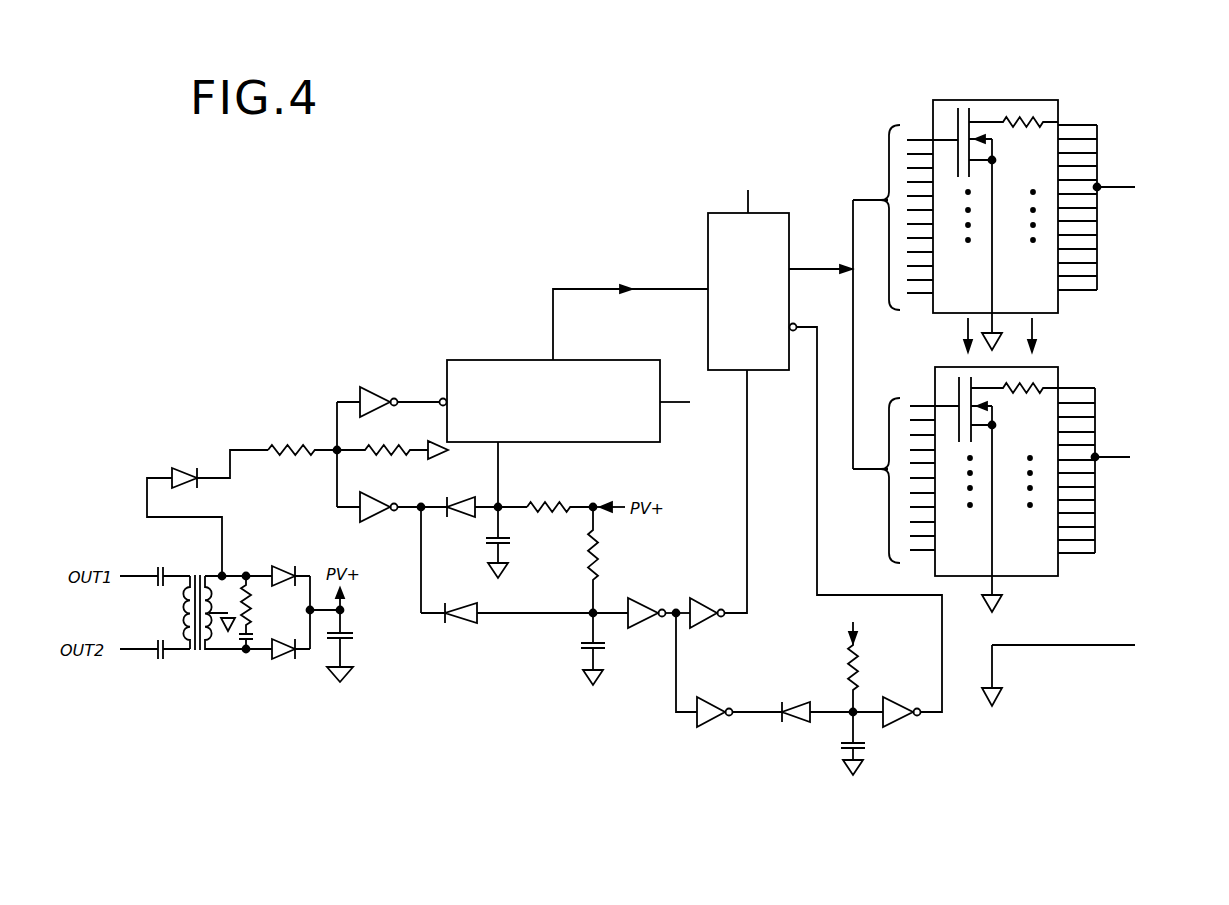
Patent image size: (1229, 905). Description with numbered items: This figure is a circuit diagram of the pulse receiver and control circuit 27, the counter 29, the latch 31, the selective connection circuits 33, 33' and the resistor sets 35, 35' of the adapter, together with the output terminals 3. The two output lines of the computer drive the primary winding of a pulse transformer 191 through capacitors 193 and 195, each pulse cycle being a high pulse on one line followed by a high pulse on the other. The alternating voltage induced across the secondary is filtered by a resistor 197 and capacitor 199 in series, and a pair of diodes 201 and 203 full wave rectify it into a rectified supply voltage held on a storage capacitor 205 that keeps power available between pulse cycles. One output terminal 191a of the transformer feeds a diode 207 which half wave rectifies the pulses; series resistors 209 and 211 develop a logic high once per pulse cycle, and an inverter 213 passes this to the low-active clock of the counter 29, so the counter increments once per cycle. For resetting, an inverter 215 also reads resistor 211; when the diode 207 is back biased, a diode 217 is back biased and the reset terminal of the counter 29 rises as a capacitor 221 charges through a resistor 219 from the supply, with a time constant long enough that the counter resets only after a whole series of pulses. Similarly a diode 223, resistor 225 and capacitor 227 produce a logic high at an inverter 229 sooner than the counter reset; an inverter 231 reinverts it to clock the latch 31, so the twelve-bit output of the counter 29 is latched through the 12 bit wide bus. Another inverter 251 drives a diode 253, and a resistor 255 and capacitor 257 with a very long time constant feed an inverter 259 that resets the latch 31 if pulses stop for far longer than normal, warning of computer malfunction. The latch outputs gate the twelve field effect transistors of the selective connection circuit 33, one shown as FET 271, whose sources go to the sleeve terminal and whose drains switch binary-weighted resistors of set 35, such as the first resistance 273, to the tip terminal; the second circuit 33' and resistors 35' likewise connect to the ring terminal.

The output terminals 3 is at (1160, 392).
The 12 bit wide bus 12 is at (872, 458).
The pulse receiver and control circuit 27 is at (462, 673).
The counter 29 is at (645, 360).
The latch 31 is at (708, 213).
The selective connection circuit 33 is at (1002, 185).
The set of resistors 35 is at (1032, 185).
The second selective connection circuit 33' is at (995, 474).
The second set of resistors 35' is at (1073, 351).
The pulse transformer 191 is at (200, 660).
The output terminal 191a is at (222, 573).
The capacitor 193 is at (162, 662).
The capacitor 195 is at (172, 556).
The resistor 197 is at (258, 612).
The capacitor 199 is at (258, 652).
The diode 201 is at (290, 574).
The diode 203 is at (254, 637).
The storage capacitor 205 is at (352, 646).
The diode 207 is at (188, 468).
The resistor 209 is at (283, 443).
The resistor 211 is at (378, 456).
The inverter 213 is at (377, 392).
The inverter 215 is at (378, 508).
The diode 217 is at (460, 498).
The resistor 219 is at (556, 506).
The capacitor 221 is at (508, 540).
The diode 223 is at (472, 606).
The resistor 225 is at (602, 552).
The capacitor 227 is at (583, 646).
The inverter 229 is at (655, 597).
The inverter 231 is at (716, 597).
The inverter 251 is at (722, 708).
The diode 253 is at (797, 700).
The resistor 255 is at (860, 668).
The capacitor 257 is at (866, 748).
The inverter 259 is at (905, 722).
The field effect transistor 271 is at (958, 108).
The first resistance 273 is at (1043, 120).